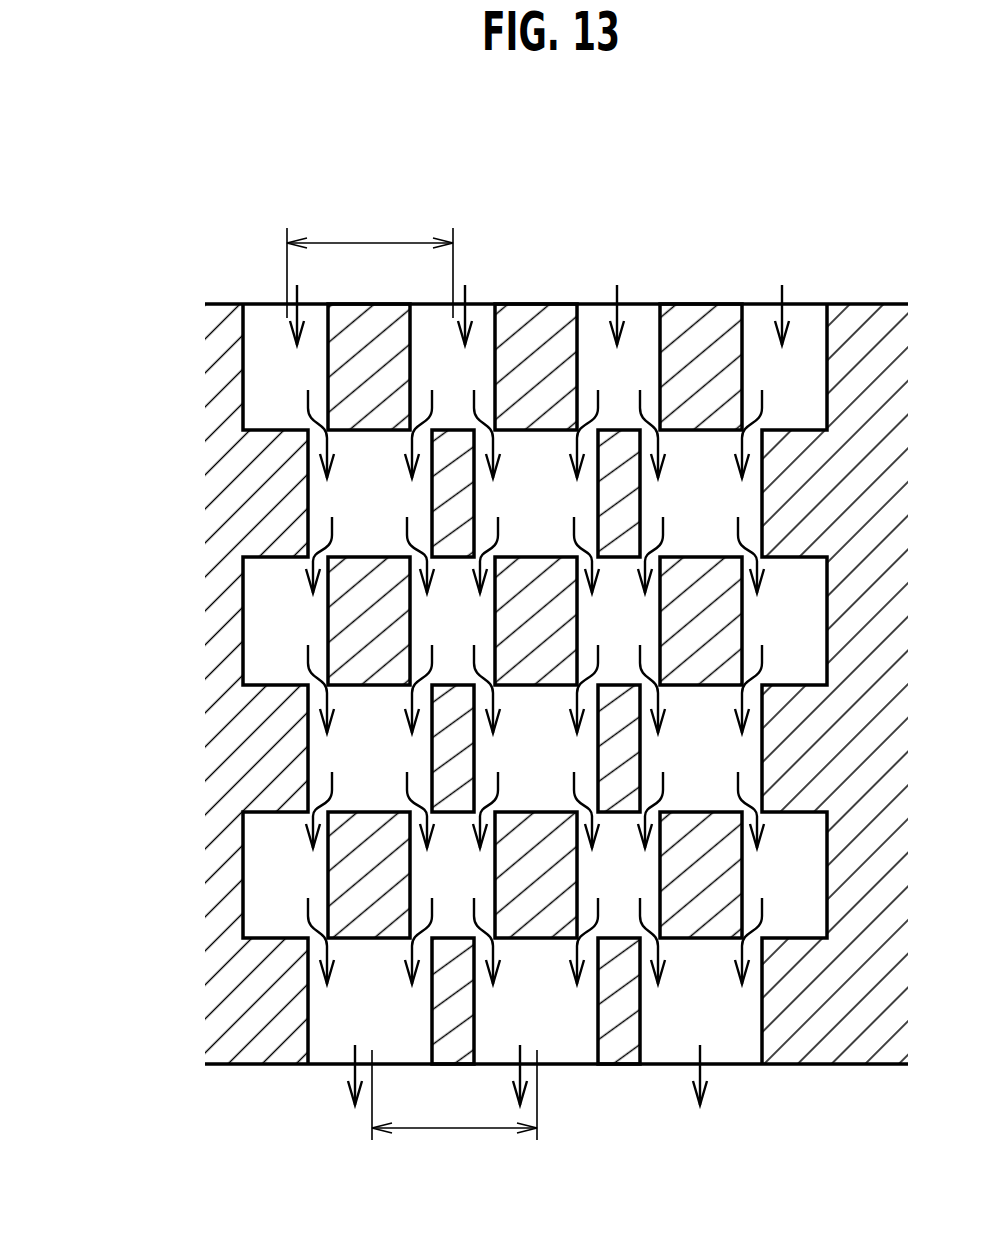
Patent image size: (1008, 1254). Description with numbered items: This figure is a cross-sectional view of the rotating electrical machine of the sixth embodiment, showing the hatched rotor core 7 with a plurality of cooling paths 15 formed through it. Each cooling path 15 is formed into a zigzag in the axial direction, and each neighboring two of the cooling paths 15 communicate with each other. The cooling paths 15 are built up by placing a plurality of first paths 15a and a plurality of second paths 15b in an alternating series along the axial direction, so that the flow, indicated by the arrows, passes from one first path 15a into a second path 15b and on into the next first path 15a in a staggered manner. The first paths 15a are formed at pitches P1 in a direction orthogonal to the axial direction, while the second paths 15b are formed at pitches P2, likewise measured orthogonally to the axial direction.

The rotor core 7 is at (210, 345).
The cooling path 15 is at (70, 620).
The first path 15a is at (263, 335).
The second path 15b is at (335, 755).
The pitch P1 is at (370, 264).
The pitch P2 is at (454, 1095).